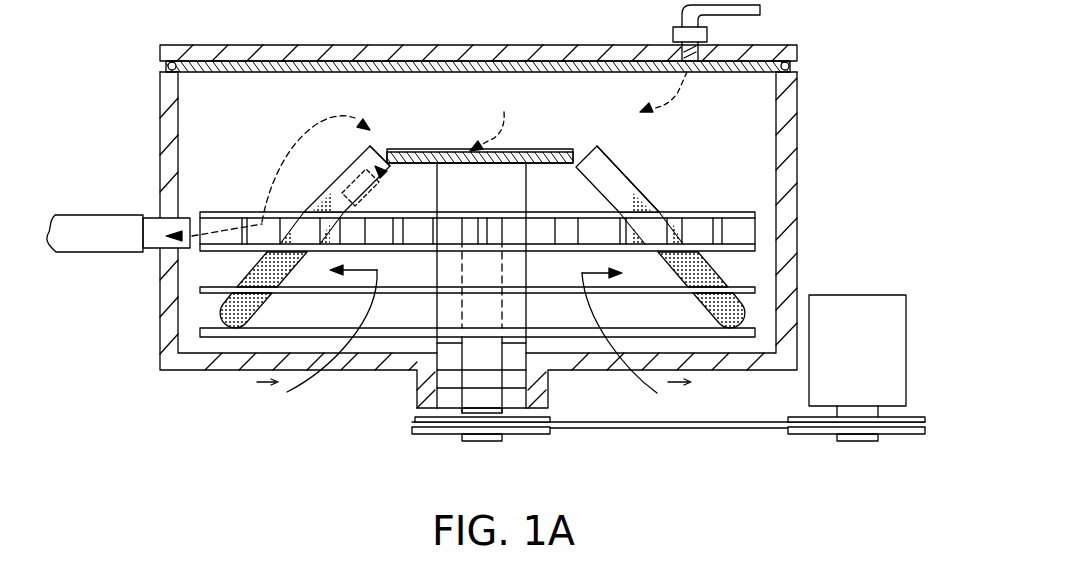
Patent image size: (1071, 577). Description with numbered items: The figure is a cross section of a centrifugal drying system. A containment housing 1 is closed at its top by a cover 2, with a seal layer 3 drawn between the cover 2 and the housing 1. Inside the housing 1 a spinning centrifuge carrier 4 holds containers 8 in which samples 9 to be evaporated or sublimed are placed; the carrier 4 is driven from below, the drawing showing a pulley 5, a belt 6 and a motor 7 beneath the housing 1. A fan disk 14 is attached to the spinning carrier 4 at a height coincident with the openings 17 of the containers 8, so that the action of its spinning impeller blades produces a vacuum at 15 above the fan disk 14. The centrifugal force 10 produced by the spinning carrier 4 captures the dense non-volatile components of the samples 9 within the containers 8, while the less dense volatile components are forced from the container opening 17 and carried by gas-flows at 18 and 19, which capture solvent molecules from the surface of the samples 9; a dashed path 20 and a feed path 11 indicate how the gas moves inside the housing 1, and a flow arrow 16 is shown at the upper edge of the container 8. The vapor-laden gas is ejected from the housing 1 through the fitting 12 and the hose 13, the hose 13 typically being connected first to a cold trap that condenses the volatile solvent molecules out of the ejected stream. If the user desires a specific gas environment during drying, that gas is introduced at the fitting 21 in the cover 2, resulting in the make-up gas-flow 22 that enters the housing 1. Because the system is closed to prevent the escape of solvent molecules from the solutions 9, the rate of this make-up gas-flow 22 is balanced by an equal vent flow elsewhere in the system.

The containment housing 1 is at (160, 96).
The cover 2 is at (218, 45).
The seal layer 3 is at (248, 75).
The centrifuge carrier 4 is at (730, 210).
The drive pulley 5 is at (412, 419).
The drive belt 6 is at (615, 422).
The motor 7 is at (809, 397).
The containers 8 is at (628, 178).
The samples 9 is at (700, 312).
The centrifugal force 10 is at (243, 402).
The powder feed path 11 is at (265, 232).
The fitting 12 is at (183, 222).
The hose 13 is at (85, 225).
The fan disk 14 is at (452, 148).
The vacuum 15 is at (493, 117).
The deflector upper edge 16 is at (387, 152).
The openings 17 is at (382, 146).
The gas-flow 18 is at (380, 170).
The gas-flow 19 is at (360, 170).
The return flow path 20 is at (290, 148).
The fitting 21 is at (673, 35).
The gas-flow 22 is at (696, 99).